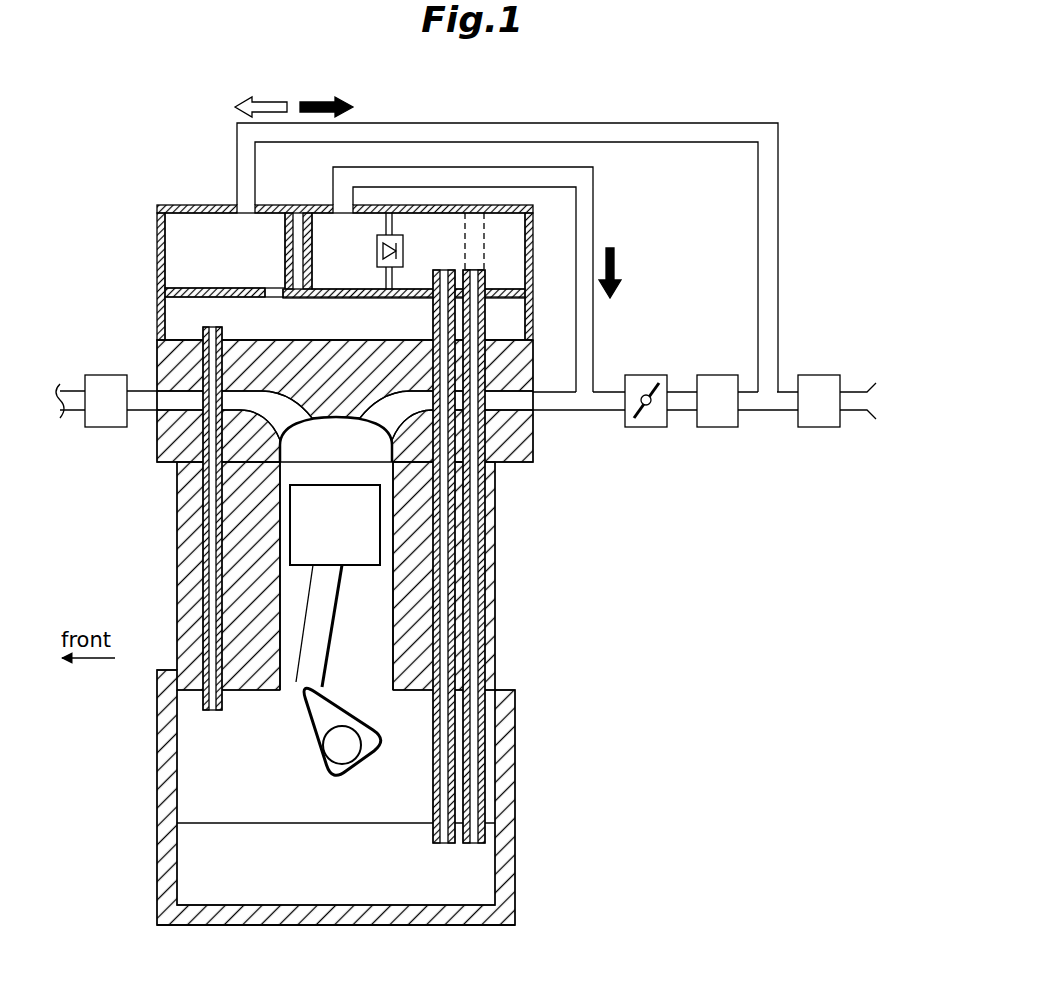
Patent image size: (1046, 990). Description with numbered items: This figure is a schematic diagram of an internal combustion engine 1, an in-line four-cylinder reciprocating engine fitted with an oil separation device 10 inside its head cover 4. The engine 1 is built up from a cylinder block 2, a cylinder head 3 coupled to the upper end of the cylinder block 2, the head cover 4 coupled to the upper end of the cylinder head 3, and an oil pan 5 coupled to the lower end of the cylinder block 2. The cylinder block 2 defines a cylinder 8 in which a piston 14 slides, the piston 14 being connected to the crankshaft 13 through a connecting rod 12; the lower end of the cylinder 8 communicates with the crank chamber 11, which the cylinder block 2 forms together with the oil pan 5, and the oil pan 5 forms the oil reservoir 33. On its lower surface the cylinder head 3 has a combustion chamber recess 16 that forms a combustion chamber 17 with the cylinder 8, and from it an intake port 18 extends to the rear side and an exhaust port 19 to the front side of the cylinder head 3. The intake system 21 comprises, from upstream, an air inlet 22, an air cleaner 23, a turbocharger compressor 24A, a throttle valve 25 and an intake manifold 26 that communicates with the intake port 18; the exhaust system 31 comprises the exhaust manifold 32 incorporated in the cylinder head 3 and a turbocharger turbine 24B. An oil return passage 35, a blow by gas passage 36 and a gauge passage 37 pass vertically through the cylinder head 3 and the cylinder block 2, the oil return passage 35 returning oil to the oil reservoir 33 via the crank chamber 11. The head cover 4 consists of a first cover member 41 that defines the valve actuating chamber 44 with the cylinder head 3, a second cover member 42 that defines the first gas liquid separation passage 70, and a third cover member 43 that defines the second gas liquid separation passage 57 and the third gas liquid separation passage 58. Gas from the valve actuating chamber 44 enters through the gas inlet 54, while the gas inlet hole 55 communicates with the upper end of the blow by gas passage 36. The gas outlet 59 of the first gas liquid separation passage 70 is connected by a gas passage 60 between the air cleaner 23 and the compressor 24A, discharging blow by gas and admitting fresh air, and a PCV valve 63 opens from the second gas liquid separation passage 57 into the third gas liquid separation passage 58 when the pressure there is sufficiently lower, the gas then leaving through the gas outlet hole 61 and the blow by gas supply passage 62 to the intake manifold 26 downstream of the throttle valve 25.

The internal combustion engine 1 is at (178, 90).
The cylinder block 2 is at (490, 658).
The cylinder head 3 is at (512, 456).
The head cover 4 is at (100, 200).
The oil pan 5 is at (165, 896).
The cylinder 8 is at (285, 600).
The oil separation device 10 is at (176, 197).
The crank chamber 11 is at (178, 770).
The connecting rod 12 is at (320, 625).
The crankshaft 13 is at (332, 750).
The piston 14 is at (300, 512).
The combustion chamber recess 16 is at (330, 423).
The combustion chamber 17 is at (299, 474).
The intake port 18 is at (536, 400).
The exhaust port 19 is at (170, 402).
The intake system 21 is at (686, 494).
The air inlet 22 is at (870, 418).
The air cleaner 23 is at (818, 420).
The turbocharger compressor 24A is at (718, 420).
The turbocharger turbine 24B is at (100, 418).
The throttle valve 25 is at (640, 380).
The intake manifold 26 is at (590, 403).
The exhaust system 31 is at (91, 357).
The exhaust manifold 32 is at (142, 392).
The oil reservoir 33 is at (178, 855).
The oil return passage 35 is at (210, 578).
The blow by gas passage 36 is at (478, 548).
The gauge passage 37 is at (443, 607).
The first cover member 41 is at (157, 300).
The second cover member 42 is at (157, 258).
The third cover member 43 is at (265, 214).
The valve actuating chamber 44 is at (297, 334).
The gas inlet 54 is at (272, 294).
The gas inlet hole 55 is at (475, 284).
The second gas liquid separation passage 57 is at (430, 224).
The third gas liquid separation passage 58 is at (327, 262).
The gas outlet 59 is at (243, 206).
The gas passage 60 is at (660, 135).
The gas outlet hole 61 is at (345, 206).
The blow by gas supply passage 62 is at (595, 220).
The PCV valve 63 is at (385, 234).
The first gas liquid separation passage 70 is at (189, 262).